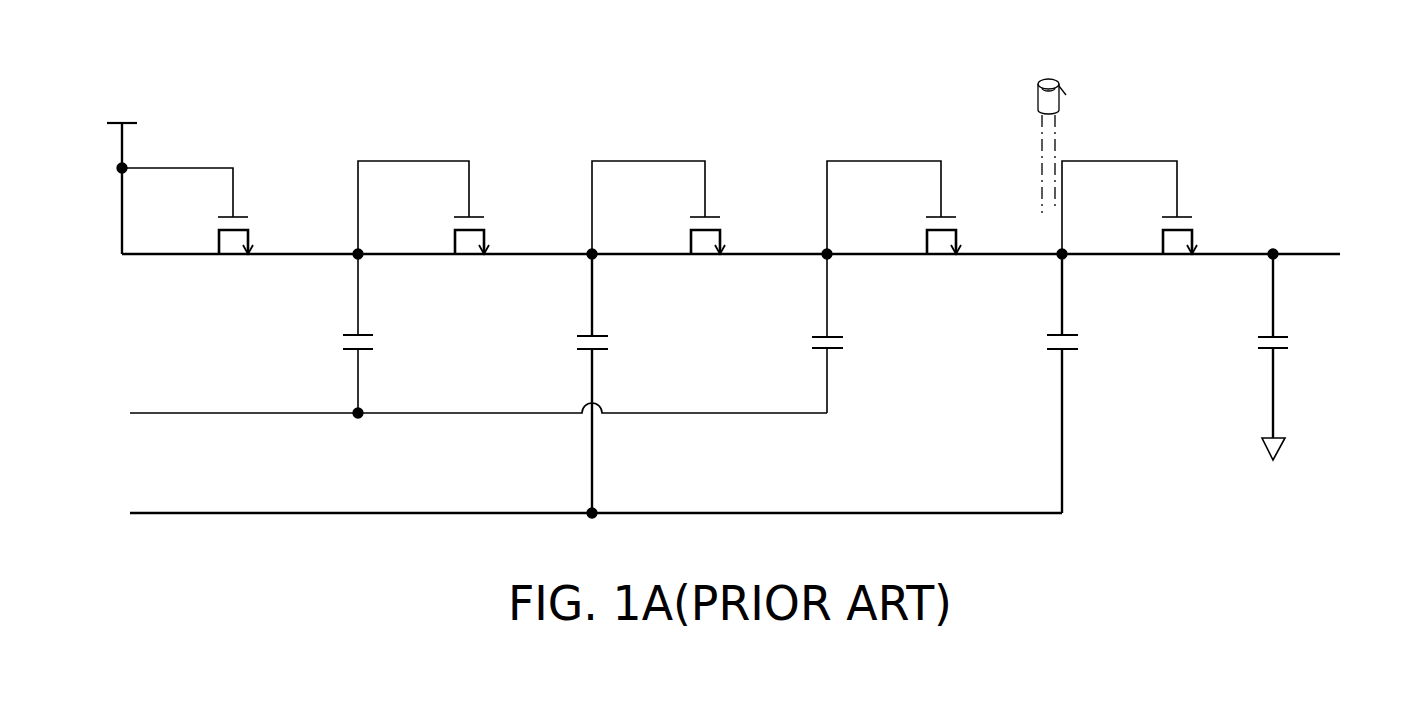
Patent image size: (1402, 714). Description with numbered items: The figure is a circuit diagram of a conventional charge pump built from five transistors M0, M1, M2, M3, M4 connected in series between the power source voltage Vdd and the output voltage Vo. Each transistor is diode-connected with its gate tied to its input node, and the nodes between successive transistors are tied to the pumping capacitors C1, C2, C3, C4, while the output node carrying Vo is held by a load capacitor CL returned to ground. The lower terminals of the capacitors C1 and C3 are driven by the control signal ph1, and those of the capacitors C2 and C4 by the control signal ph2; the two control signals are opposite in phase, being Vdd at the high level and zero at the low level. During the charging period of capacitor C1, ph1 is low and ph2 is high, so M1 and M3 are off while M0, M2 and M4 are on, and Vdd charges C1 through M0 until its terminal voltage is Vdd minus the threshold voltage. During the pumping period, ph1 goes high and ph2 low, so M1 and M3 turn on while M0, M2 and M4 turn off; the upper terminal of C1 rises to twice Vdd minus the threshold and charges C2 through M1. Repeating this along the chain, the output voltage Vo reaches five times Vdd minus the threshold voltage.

The power source voltage Vdd is at (120, 169).
The transistor M0 is at (187, 232).
The transistor M1 is at (423, 229).
The transistor M2 is at (658, 229).
The transistor M3 is at (894, 229).
The transistor M4 is at (1129, 229).
The capacitor C1 is at (376, 333).
The capacitor C2 is at (612, 383).
The capacitor C3 is at (847, 333).
The capacitor C4 is at (1082, 383).
The load capacitor CL is at (1293, 357).
The output voltage Vo is at (1361, 256).
The control signal ph1 is at (456, 409).
The control signal ph2 is at (573, 509).